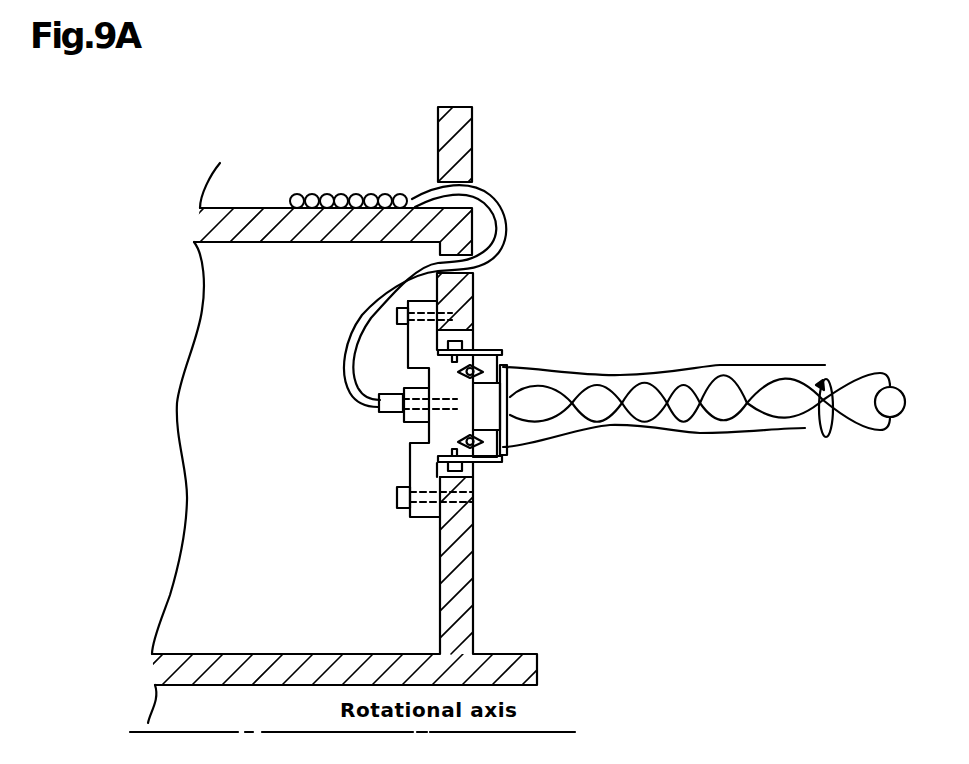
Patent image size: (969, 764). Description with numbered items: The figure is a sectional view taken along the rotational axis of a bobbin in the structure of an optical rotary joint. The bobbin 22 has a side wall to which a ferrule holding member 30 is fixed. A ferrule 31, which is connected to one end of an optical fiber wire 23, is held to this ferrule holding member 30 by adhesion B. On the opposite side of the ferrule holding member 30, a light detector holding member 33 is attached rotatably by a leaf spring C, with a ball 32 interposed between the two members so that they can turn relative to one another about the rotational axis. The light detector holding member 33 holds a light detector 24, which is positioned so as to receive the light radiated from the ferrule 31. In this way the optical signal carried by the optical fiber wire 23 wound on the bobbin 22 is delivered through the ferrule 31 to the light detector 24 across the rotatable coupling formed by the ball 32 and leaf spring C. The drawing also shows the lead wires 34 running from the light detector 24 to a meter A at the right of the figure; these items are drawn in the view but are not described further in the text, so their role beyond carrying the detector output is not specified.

The bobbin 22 is at (470, 107).
The optical fiber wire 23 is at (337, 195).
The light detector 24 is at (537, 368).
The ferrule holding member 30 is at (437, 518).
The ferrule 31 is at (414, 412).
The ball 32 is at (487, 463).
The light detector holding member 33 is at (496, 351).
The twisted lead wires 34 is at (716, 367).
The ammeter A is at (890, 402).
The adhesion B is at (418, 428).
The leaf spring C is at (502, 364).